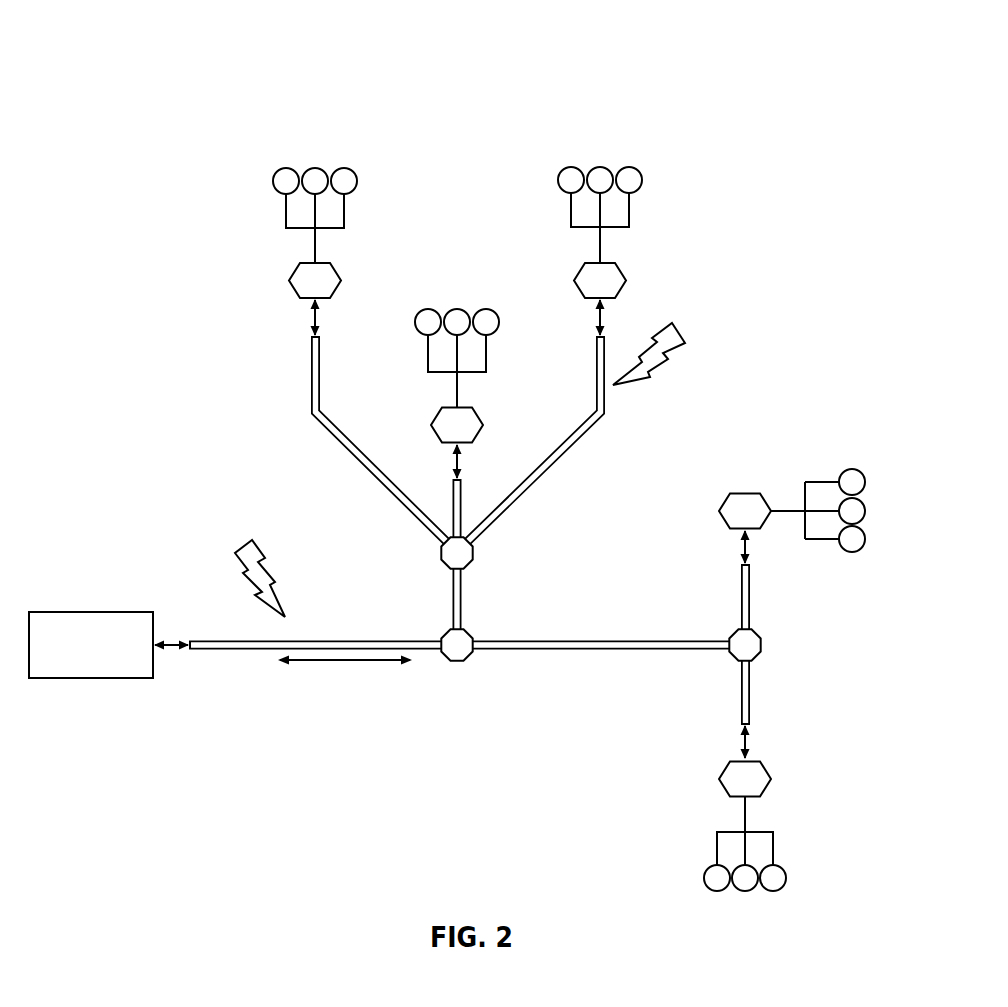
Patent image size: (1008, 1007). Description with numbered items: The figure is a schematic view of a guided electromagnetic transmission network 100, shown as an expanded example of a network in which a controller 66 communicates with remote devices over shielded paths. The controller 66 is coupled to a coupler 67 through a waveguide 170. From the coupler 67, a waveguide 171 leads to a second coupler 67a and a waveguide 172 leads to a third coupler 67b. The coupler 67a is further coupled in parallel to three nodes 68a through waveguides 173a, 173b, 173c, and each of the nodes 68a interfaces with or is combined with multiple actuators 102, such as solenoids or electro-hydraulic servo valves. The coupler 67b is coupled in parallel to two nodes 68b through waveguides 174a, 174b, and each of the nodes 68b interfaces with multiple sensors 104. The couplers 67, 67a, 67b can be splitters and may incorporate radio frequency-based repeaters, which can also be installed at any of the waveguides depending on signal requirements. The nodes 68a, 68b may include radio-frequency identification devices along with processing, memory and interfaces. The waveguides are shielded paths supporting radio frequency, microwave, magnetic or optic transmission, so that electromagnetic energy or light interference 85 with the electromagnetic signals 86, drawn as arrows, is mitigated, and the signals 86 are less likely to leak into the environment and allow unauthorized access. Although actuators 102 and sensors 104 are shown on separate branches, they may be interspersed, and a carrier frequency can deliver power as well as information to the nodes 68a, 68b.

The guided electromagnetic transmission network 100 is at (183, 58).
The actuators 102 is at (345, 167).
The sensors 104 is at (857, 467).
The controller 66 is at (105, 658).
The coupler 67 is at (455, 663).
The coupler 67a is at (470, 568).
The coupler 67b is at (767, 642).
The nodes 68a is at (338, 268).
The nodes 68b is at (747, 492).
The electromagnetic energy or light interference 85 is at (263, 547).
The electromagnetic signals 86 is at (345, 663).
The waveguide 170 is at (233, 652).
The waveguide 171 is at (452, 594).
The waveguide 172 is at (578, 652).
The waveguide 173a is at (310, 375).
The waveguide 173b is at (445, 510).
The waveguide 173c is at (537, 483).
The waveguide 174a is at (737, 595).
The waveguide 174b is at (737, 692).